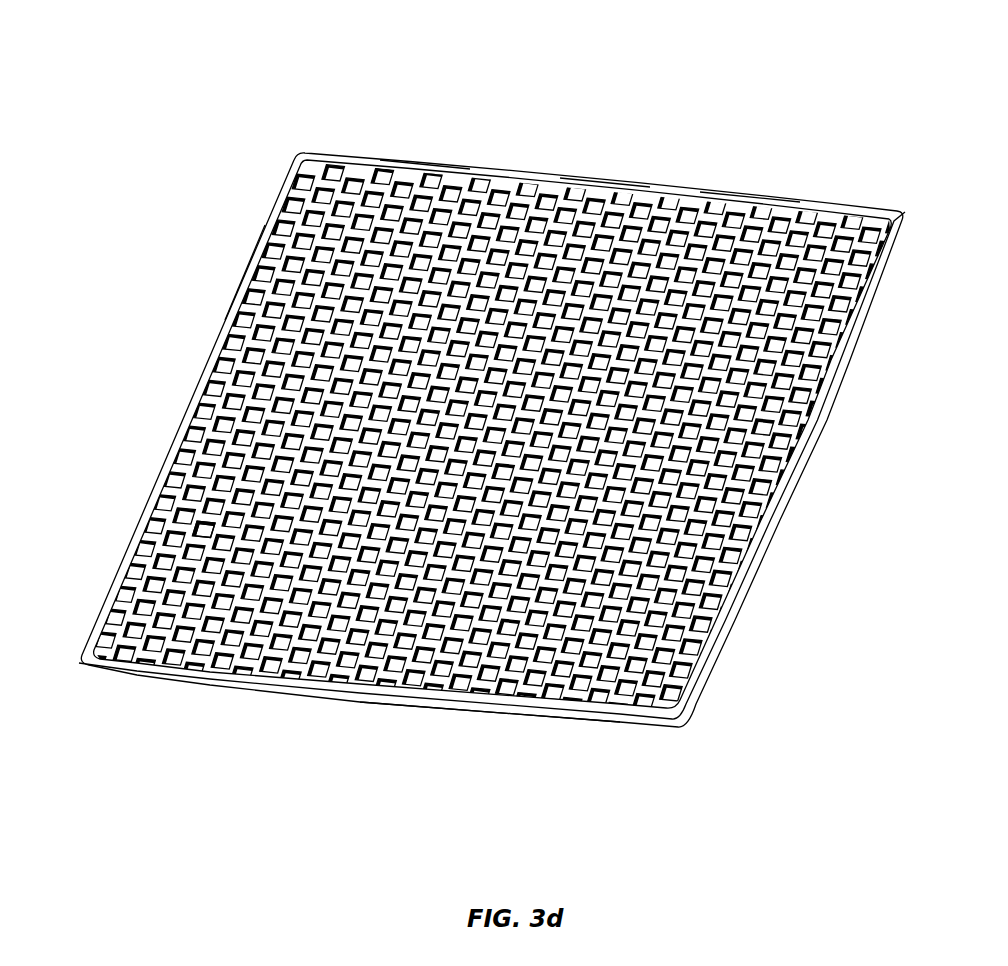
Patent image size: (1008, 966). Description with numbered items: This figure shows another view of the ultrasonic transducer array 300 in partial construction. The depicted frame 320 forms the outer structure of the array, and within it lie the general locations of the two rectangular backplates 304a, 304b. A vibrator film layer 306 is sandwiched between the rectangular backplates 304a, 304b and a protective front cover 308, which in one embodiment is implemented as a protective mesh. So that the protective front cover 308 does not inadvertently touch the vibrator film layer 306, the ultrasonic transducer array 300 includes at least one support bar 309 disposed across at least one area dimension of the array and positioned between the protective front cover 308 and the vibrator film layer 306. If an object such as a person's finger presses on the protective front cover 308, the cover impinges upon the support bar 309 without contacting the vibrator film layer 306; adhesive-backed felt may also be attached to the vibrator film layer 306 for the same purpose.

The ultrasonic transducer array 300 is at (315, 60).
The rectangular backplate 304a is at (746, 176).
The rectangular backplate 304b is at (424, 150).
The support bar 309 is at (603, 172).
The protective front cover 308 is at (243, 302).
The vibrator film layer 306 is at (203, 524).
The frame 320 is at (452, 714).